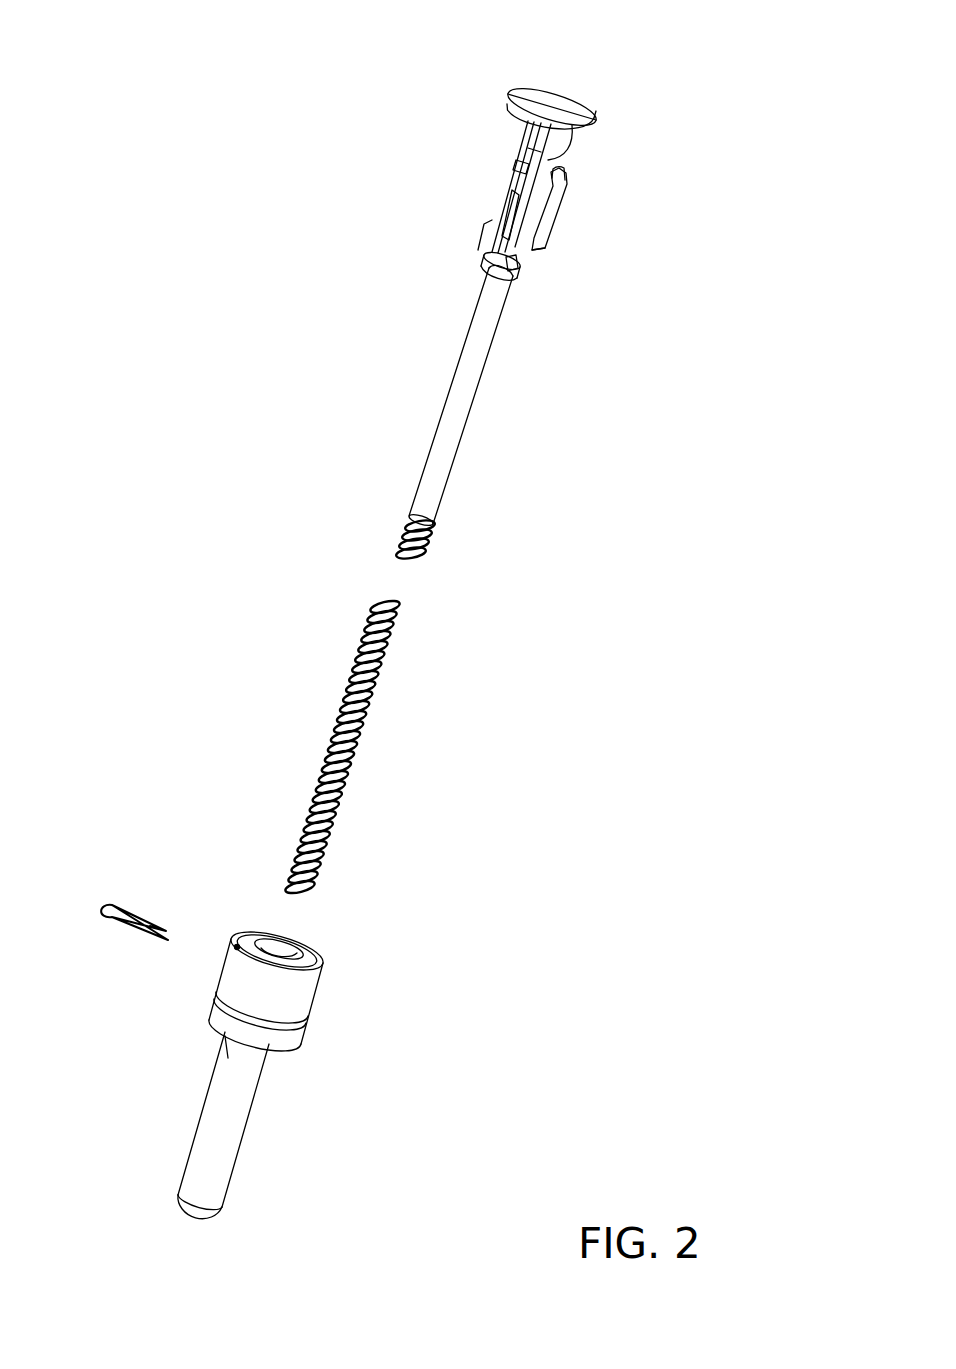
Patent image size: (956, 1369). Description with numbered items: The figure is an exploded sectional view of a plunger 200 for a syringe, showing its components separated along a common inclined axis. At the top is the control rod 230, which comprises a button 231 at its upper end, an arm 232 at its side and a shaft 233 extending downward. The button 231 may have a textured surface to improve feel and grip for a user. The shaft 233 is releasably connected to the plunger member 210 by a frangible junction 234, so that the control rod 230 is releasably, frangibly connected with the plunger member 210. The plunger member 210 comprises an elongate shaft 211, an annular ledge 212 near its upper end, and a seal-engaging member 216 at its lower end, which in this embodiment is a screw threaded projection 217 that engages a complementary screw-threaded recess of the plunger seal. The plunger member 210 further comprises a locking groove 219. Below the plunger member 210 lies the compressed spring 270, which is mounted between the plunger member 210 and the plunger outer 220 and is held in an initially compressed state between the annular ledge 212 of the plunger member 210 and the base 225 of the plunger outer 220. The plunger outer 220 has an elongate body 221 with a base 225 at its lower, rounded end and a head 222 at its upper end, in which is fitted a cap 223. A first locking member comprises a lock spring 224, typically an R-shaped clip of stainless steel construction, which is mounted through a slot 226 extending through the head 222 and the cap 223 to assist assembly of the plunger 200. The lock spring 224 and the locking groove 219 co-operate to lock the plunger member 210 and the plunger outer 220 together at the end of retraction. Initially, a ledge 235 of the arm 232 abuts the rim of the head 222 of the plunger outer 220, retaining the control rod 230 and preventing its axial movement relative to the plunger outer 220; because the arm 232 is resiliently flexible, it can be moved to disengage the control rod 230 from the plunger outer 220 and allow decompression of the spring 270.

The plunger 200 is at (207, 605).
The plunger member 210 is at (490, 430).
The shaft 211 is at (437, 437).
The annular ledge 212 is at (484, 265).
The seal-engaging member 216 is at (436, 546).
The screw threaded projection 217 is at (398, 533).
The locking groove 219 is at (525, 273).
The plunger outer 220 is at (171, 1147).
The elongate body 221 is at (226, 1120).
The head 222 is at (292, 984).
The cap 223 is at (300, 943).
The lock spring 224 is at (110, 912).
The base 225 is at (188, 1222).
The slot 226 is at (236, 952).
The control rod 230 is at (508, 197).
The button 231 is at (556, 98).
The arm 232 is at (563, 188).
The shaft 233 is at (493, 231).
The frangible junction 234 is at (547, 241).
The ledge 235 is at (566, 172).
The compressed spring 270 is at (322, 756).